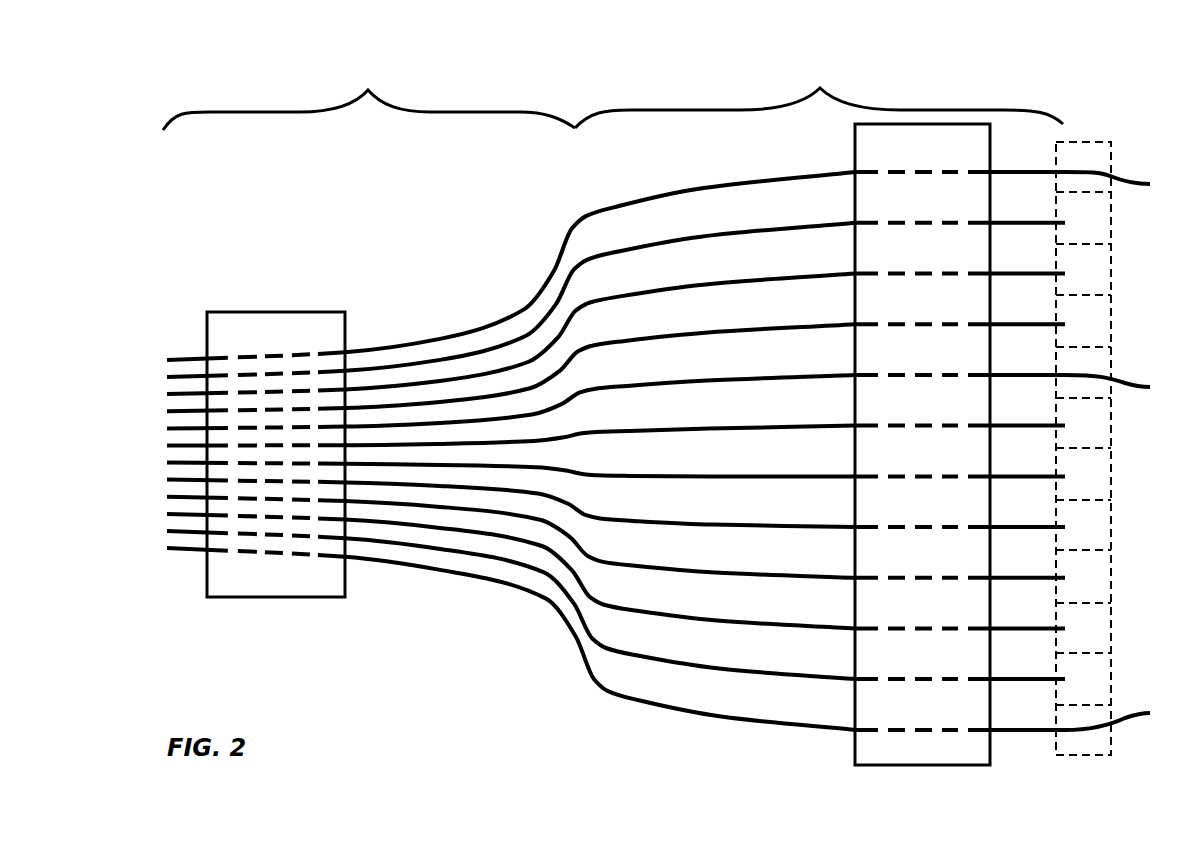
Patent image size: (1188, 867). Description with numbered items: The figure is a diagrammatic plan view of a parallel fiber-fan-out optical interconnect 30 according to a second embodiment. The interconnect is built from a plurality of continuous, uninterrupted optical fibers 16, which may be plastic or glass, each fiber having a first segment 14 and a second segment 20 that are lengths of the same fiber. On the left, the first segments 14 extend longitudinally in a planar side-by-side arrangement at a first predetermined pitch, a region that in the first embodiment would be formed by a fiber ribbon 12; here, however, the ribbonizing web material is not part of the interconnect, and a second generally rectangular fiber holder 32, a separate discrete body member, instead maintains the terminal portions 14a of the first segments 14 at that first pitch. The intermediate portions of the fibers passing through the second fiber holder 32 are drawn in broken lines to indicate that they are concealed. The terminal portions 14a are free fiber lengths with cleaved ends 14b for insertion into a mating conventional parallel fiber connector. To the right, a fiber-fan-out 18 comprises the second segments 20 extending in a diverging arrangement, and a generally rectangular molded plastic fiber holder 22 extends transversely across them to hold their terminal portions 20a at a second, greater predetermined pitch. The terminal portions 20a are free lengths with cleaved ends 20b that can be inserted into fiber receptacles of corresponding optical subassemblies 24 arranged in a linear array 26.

The fiber ribbon 12 is at (369, 97).
The first segments 14 is at (227, 438).
The terminal portions 14a is at (185, 552).
The cleaved ends 14b is at (168, 358).
The optical fibers 16 is at (366, 541).
The fiber-fan-out 18 is at (819, 95).
The second segments 20 is at (553, 207).
The terminal portions 20a is at (1028, 170).
The cleaved ends 20b is at (1126, 451).
The fiber holder 22 is at (878, 750).
The optical subassemblies 24 is at (1095, 143).
The linear array 26 is at (1119, 460).
The parallel fiber-fan-out optical interconnect 30 is at (543, 632).
The second fiber holder 32 is at (229, 586).